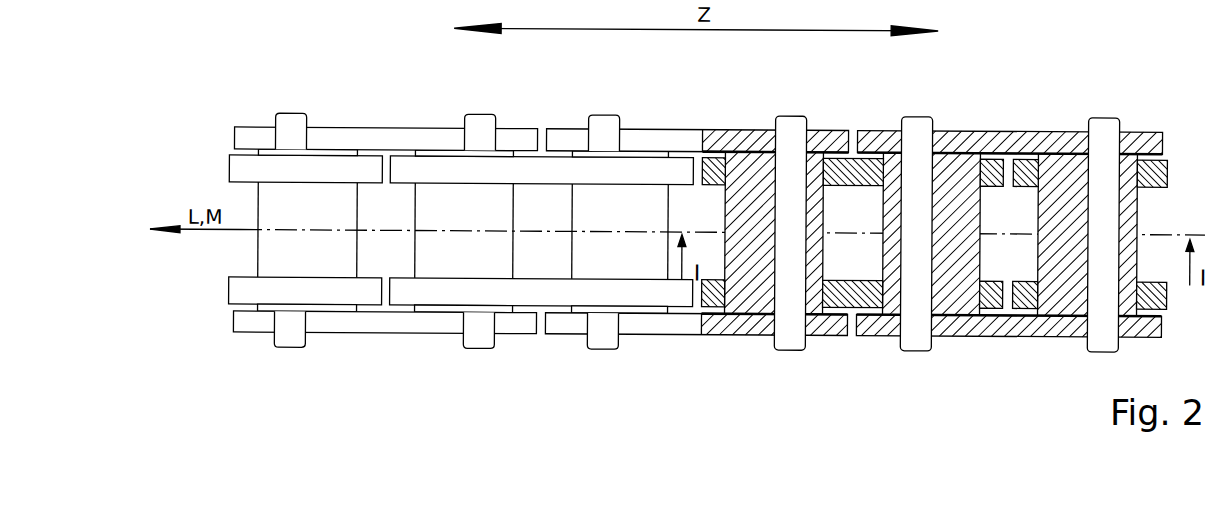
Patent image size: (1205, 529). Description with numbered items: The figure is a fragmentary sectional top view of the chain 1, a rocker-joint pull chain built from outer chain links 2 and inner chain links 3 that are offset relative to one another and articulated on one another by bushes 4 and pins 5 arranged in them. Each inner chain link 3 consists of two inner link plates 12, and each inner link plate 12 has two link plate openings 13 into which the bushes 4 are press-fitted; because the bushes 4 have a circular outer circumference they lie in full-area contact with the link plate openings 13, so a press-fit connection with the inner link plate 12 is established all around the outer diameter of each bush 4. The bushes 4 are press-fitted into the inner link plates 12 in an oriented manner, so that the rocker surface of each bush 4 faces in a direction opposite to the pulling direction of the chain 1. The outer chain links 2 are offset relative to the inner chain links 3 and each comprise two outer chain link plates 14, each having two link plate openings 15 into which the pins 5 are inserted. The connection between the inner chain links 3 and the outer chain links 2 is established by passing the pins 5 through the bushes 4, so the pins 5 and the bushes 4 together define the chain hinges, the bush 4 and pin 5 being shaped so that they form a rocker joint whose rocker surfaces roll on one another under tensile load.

The chain 1 is at (208, 164).
The outer chain link 2 is at (378, 325).
The inner chain link 3 is at (548, 175).
The bush 4 is at (757, 290).
The pin 5 is at (291, 122).
The inner link plate 12 is at (996, 162).
The link plate opening 13 is at (716, 157).
The outer chain link plate 14 is at (247, 130).
The link plate opening 15 is at (314, 136).